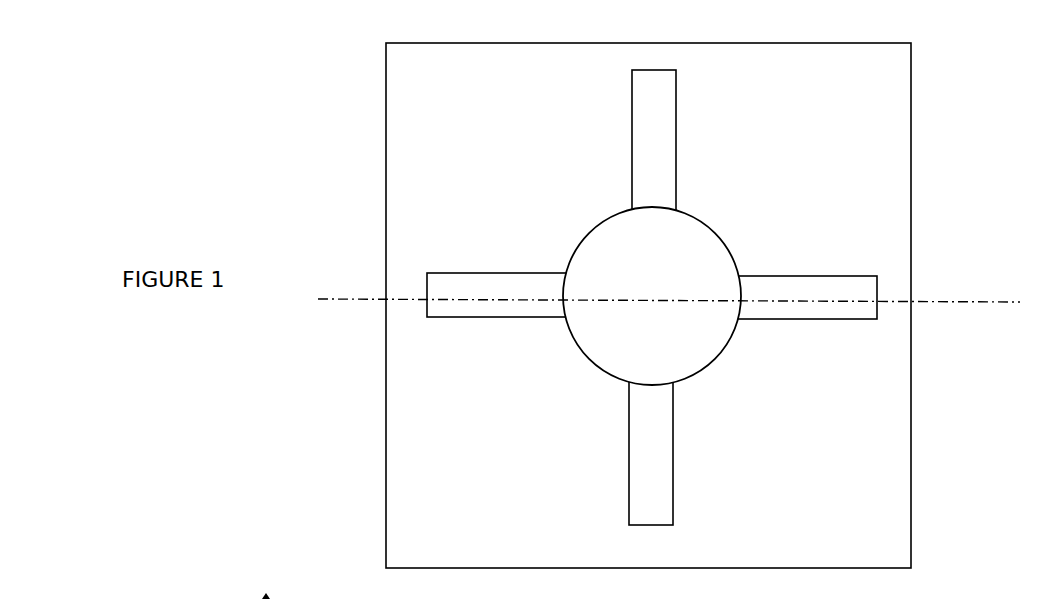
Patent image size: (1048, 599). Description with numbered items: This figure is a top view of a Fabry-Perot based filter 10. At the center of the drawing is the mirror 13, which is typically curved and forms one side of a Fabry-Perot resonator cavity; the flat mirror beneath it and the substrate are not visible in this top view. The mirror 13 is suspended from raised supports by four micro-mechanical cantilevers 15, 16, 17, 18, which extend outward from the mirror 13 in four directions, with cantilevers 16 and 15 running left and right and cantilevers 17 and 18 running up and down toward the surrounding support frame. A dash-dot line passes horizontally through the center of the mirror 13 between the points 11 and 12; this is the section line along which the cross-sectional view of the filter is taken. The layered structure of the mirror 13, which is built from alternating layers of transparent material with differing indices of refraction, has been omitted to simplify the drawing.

The Fabry-Perot based filter 10 is at (115, 143).
The section line endpoint 11 is at (343, 300).
The section line endpoint 12 is at (996, 303).
The mirror 13 is at (590, 244).
The micro-mechanical cantilever 15 is at (803, 287).
The micro-mechanical cantilever 16 is at (480, 278).
The micro-mechanical cantilever 17 is at (669, 142).
The micro-mechanical cantilever 18 is at (667, 429).